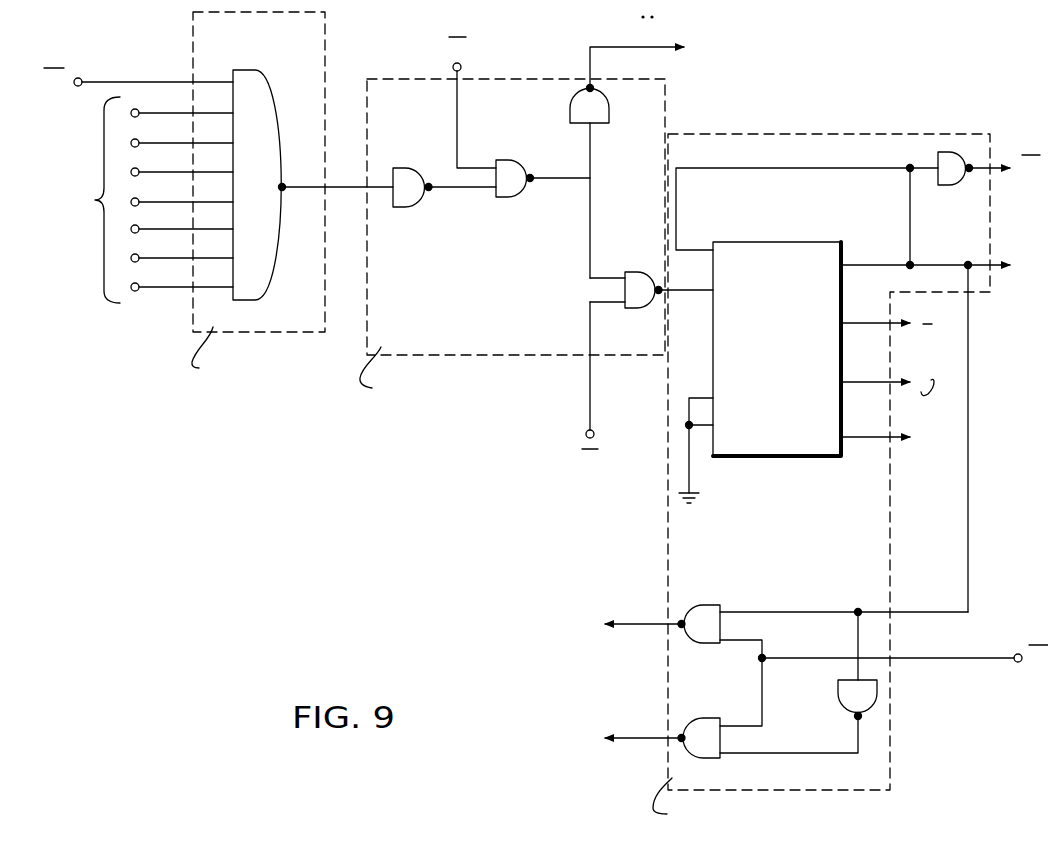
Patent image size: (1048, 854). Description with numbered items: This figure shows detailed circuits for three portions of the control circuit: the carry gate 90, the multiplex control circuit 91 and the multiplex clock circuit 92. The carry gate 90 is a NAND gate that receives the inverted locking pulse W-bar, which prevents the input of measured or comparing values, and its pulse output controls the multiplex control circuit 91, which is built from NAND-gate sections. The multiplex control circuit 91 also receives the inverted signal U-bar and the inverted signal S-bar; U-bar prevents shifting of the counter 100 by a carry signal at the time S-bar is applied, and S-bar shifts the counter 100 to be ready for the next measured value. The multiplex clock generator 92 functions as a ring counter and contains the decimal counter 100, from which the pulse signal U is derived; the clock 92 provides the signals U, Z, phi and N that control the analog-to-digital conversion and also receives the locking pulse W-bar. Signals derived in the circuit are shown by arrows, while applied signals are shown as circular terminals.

The carry gate 90 is at (218, 208).
The multiplex control circuit 91 is at (536, 243).
The multiplex clock generator 92 is at (813, 478).
The decimal counter 100 is at (858, 382).